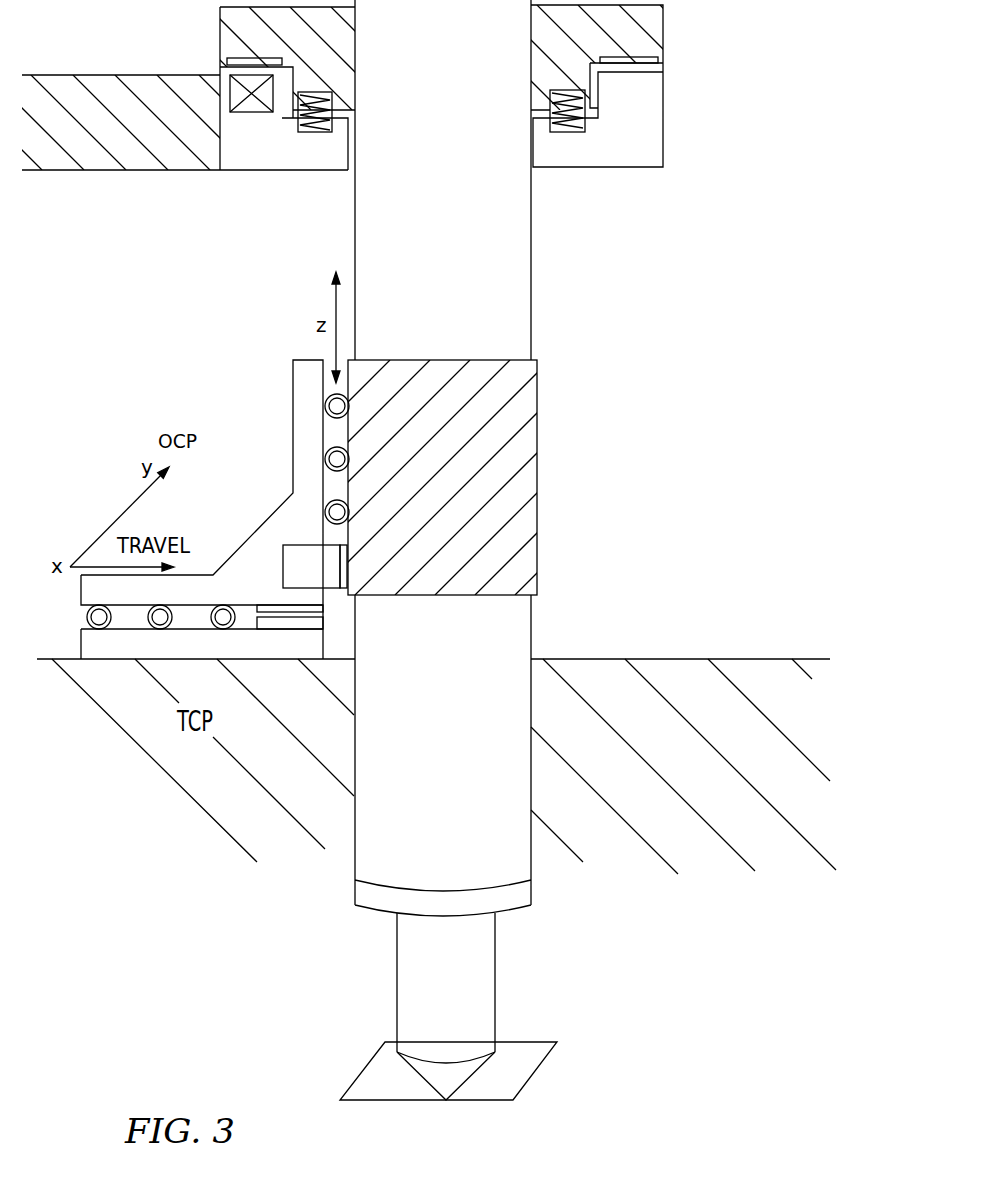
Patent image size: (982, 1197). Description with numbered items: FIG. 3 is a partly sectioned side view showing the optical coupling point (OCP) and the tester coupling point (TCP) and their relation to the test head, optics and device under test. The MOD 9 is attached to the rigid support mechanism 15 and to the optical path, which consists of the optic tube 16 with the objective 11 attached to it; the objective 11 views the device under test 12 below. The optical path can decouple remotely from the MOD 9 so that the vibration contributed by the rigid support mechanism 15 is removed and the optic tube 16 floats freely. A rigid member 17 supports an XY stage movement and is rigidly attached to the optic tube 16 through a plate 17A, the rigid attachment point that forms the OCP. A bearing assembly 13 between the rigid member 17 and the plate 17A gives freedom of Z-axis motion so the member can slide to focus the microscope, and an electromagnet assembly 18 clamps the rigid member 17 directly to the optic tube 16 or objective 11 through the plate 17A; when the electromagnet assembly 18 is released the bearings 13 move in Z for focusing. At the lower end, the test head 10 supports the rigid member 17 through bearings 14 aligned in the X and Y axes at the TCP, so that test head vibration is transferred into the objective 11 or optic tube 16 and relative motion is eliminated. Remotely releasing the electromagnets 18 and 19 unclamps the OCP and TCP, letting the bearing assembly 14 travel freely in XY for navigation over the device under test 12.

The MOD 9 is at (653, 130).
The test head 10 is at (663, 668).
The objective 11 is at (482, 1003).
The device under test 12 is at (523, 1062).
The bearing assembly 13 is at (337, 433).
The bearings 14 is at (130, 618).
The rigid support mechanism 15 is at (143, 163).
The optic tube 16 is at (515, 258).
The rigid member 17 is at (280, 528).
The plate 17A is at (518, 450).
The electromagnet assembly 18 is at (330, 582).
The electromagnet 19 is at (288, 623).